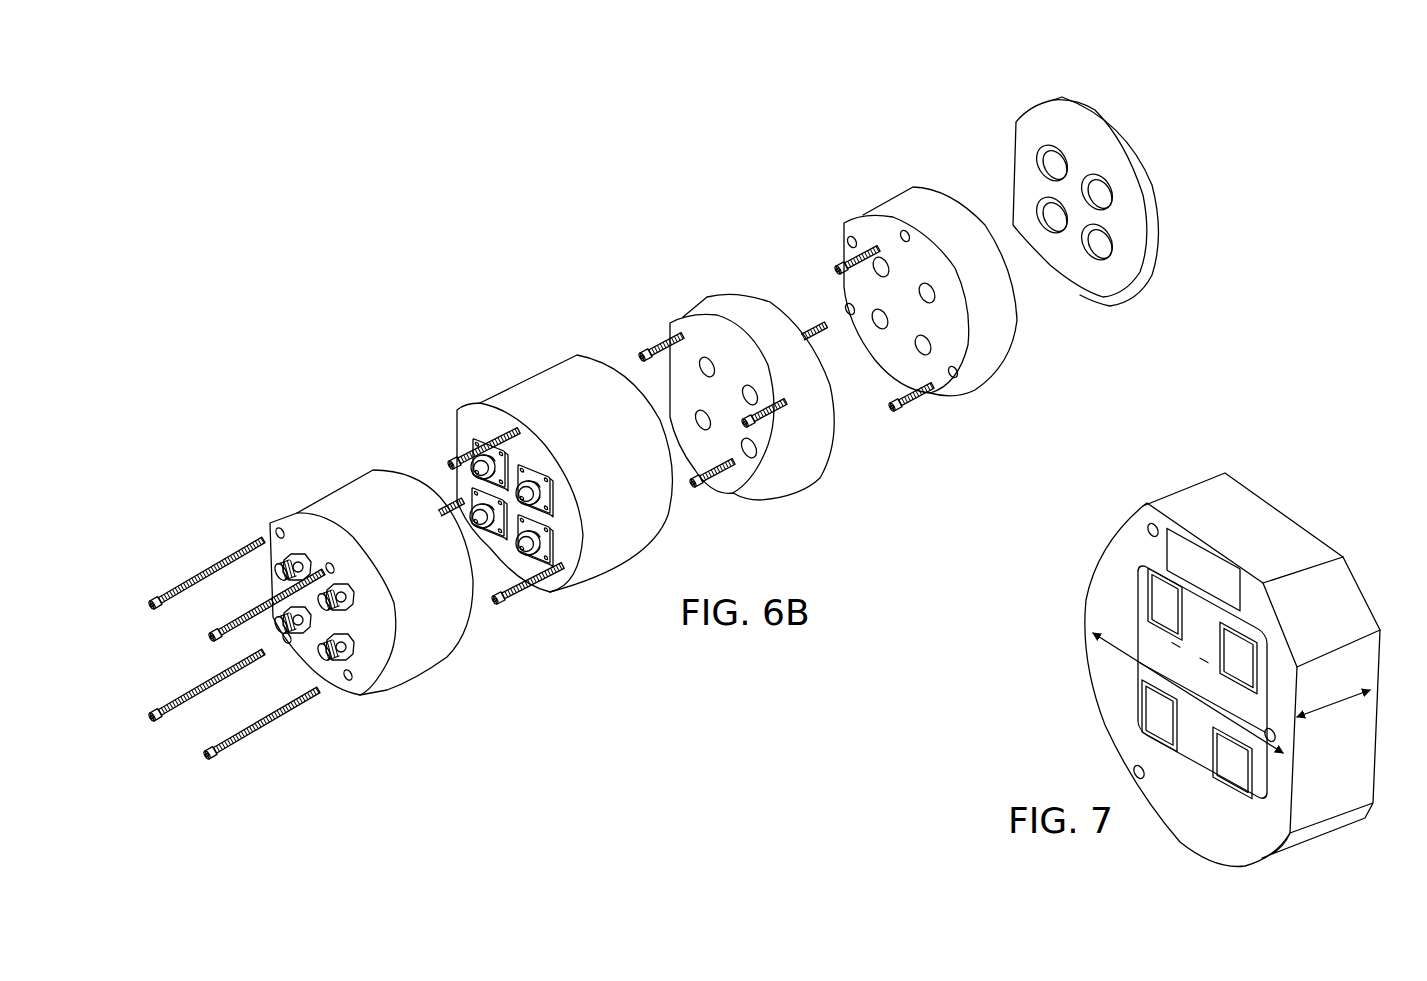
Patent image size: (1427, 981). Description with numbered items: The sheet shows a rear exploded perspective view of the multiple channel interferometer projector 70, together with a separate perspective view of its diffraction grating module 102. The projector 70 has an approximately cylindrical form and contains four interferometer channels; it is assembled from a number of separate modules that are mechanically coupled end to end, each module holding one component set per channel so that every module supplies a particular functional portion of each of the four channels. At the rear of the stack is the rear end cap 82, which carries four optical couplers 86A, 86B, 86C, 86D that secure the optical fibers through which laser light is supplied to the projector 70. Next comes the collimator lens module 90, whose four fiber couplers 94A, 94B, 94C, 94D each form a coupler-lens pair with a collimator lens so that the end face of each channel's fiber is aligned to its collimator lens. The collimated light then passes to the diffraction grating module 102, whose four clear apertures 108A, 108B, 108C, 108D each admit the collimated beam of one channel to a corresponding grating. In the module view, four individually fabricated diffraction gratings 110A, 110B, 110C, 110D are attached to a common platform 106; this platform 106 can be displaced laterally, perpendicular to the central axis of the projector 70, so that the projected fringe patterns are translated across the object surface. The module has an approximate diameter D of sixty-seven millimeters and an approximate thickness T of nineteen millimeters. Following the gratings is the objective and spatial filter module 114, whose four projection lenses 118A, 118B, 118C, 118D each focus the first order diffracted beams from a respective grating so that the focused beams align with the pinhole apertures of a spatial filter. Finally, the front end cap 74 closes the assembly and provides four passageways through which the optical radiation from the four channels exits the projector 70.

In FIG. 6B, the multiple channel interferometer projector 70 is at (535, 248).
In FIG. 6B, the front end cap 74 is at (1000, 102).
In FIG. 6B, the rear end cap 82 is at (300, 477).
In FIG. 6B, the optical coupler 86A is at (330, 610).
In FIG. 6B, the optical coupler 86B is at (325, 655).
In FIG. 6B, the optical coupler 86C is at (280, 575).
In FIG. 6B, the optical coupler 86D is at (282, 630).
In FIG. 6B, the collimator lens module 90 is at (517, 368).
In FIG. 6B, the fiber coupler 94A is at (535, 474).
In FIG. 6B, the fiber coupler 94B is at (552, 548).
In FIG. 6B, the fiber coupler 94C is at (478, 442).
In FIG. 6B, the fiber coupler 94D is at (470, 498).
In FIG. 6B, the diffraction grating module 102 is at (672, 272).
In FIG. 7, the diffraction grating module 102 is at (1083, 517).
In FIG. 7, the common platform 106 is at (1202, 682).
In FIG. 6B, the clear aperture 108A is at (753, 388).
In FIG. 6B, the clear aperture 108B is at (748, 456).
In FIG. 6B, the clear aperture 108C is at (703, 358).
In FIG. 6B, the clear aperture 108D is at (697, 417).
In FIG. 7, the diffraction grating 110A is at (1165, 604).
In FIG. 7, the diffraction grating 110B is at (1159, 715).
In FIG. 7, the diffraction grating 110C is at (1238, 658).
In FIG. 7, the diffraction grating 110D is at (1232, 763).
In FIG. 6B, the objective and spatial filter module 114 is at (832, 165).
In FIG. 6B, the projection lens 118A is at (938, 288).
In FIG. 6B, the projection lens 118B is at (932, 355).
In FIG. 6B, the projection lens 118C is at (878, 328).
In FIG. 6B, the projection lens 118D is at (882, 255).
In FIG. 7, the diameter D is at (1115, 650).
In FIG. 7, the thickness T is at (1333, 698).